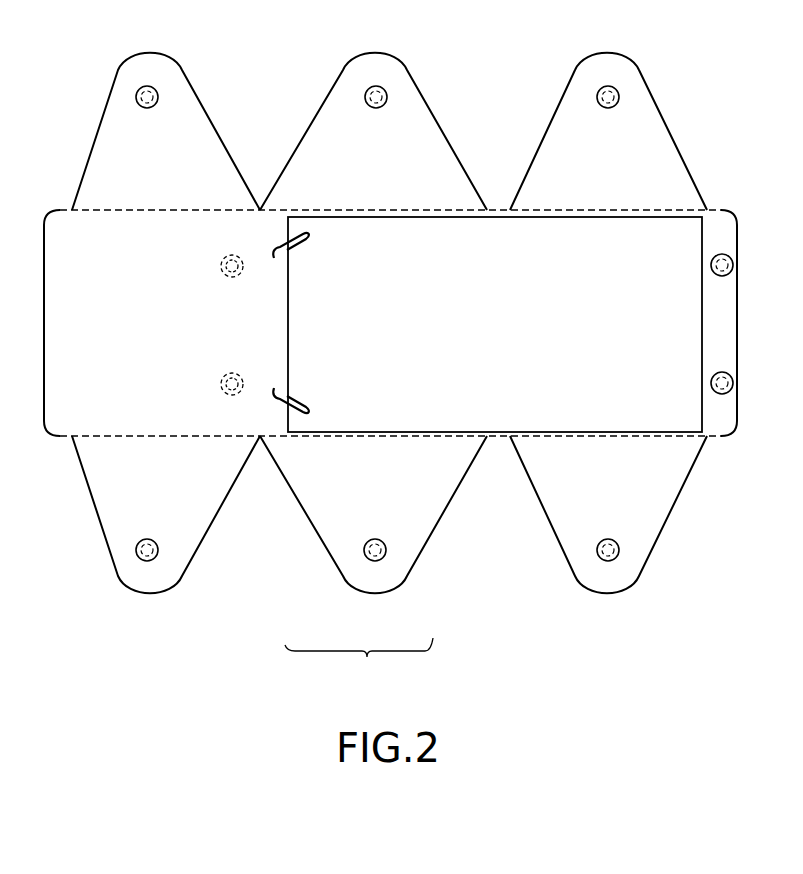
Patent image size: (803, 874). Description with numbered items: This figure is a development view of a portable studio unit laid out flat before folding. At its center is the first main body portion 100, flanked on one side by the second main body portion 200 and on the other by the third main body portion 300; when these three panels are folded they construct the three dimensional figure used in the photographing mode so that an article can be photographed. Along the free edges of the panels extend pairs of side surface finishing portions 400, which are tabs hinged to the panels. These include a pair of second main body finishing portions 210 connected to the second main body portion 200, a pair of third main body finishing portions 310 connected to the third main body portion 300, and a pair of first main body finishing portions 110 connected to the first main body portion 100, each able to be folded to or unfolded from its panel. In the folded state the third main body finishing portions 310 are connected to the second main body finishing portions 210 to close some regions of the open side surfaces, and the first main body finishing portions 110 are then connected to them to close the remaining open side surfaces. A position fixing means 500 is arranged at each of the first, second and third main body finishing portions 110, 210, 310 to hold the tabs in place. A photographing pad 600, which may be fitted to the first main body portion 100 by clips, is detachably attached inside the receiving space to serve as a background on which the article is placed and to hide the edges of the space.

The first main body portion 100 is at (348, 212).
The first main body finishing portions 110 is at (375, 60).
The second main body portion 200 is at (113, 402).
The second main body finishing portions 210 is at (150, 60).
The third main body portion 300 is at (600, 437).
The third main body finishing portions 310 is at (608, 62).
The side surface finishing portions 400 is at (359, 659).
The position fixing means 500 is at (147, 110).
The photographing pad 600 is at (492, 437).